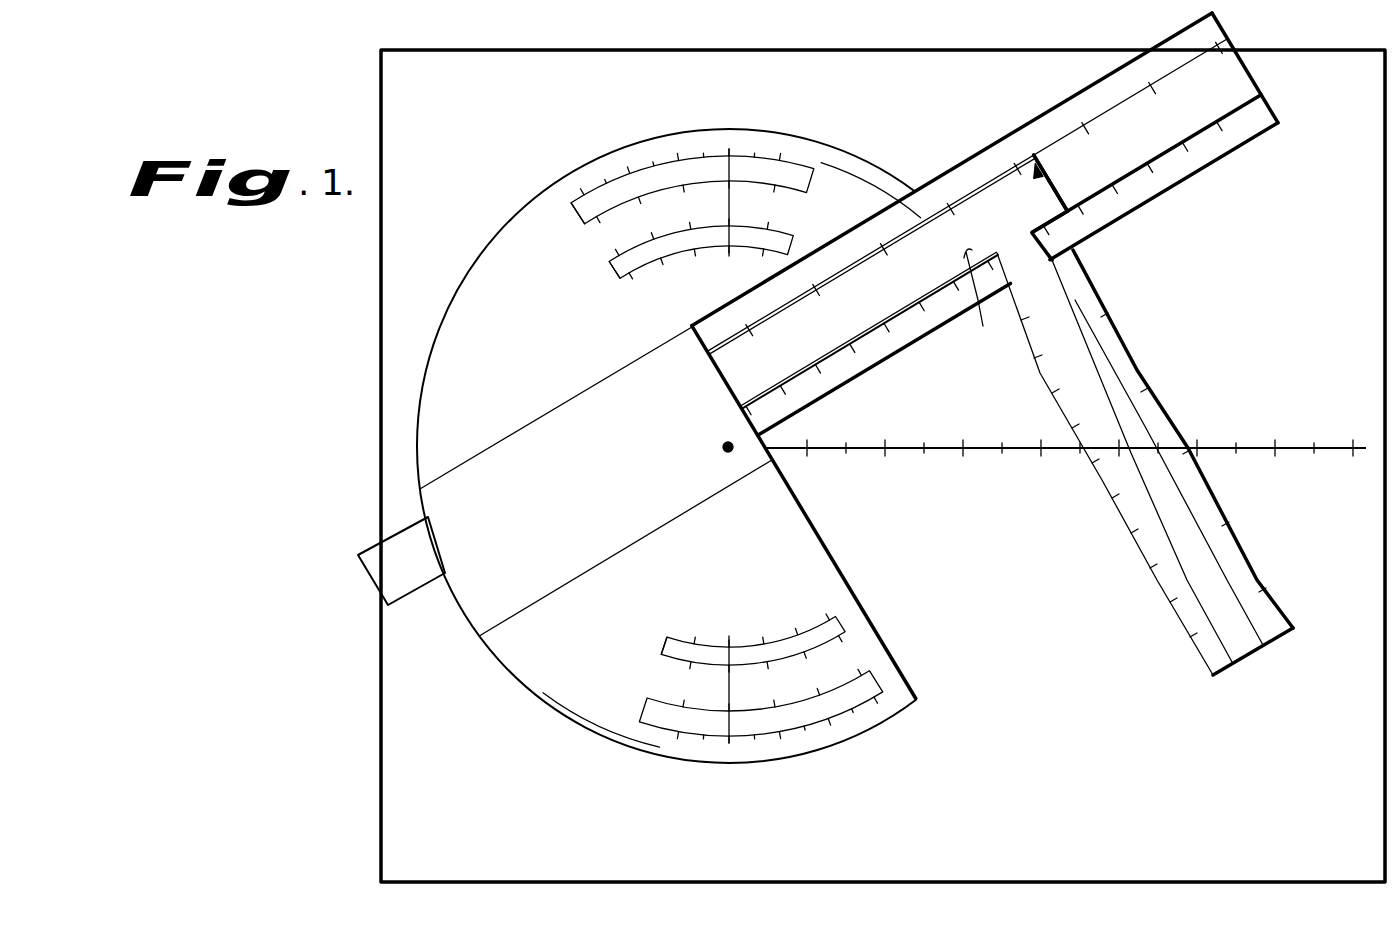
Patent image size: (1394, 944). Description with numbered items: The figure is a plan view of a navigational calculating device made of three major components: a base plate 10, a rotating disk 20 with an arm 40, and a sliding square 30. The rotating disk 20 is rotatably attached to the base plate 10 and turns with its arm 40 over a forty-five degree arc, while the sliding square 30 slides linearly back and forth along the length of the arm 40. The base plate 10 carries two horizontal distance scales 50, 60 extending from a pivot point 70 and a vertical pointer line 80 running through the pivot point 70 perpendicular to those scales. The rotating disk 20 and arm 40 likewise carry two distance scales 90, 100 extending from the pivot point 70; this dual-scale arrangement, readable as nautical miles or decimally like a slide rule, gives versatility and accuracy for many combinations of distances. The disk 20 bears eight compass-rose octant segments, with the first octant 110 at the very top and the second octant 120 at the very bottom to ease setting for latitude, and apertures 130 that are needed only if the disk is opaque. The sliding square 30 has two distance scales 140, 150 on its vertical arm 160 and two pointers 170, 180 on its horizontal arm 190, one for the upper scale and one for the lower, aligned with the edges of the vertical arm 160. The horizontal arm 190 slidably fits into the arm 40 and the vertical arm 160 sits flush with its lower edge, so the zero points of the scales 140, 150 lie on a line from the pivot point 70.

The base plate 10 is at (1272, 790).
The rotating disk 20 is at (497, 376).
The sliding square 30 is at (1018, 240).
The arm 40 is at (1243, 79).
The horizontal distance scale 50 is at (1343, 468).
The horizontal distance scale 60 is at (1318, 448).
The pivot point 70 is at (722, 447).
The vertical pointer line 80 is at (733, 167).
The distance scale 90 is at (1225, 128).
The distance scale 100 is at (1220, 40).
The first octant 110 is at (580, 194).
The second octant 120 is at (667, 733).
The apertures 130 is at (619, 278).
The distance scale 140 is at (1192, 637).
The distance scale 150 is at (1270, 590).
The vertical arm 160 is at (1250, 640).
The pointer 170 is at (982, 305).
The pointer 180 is at (1045, 160).
The horizontal arm 190 is at (1047, 202).